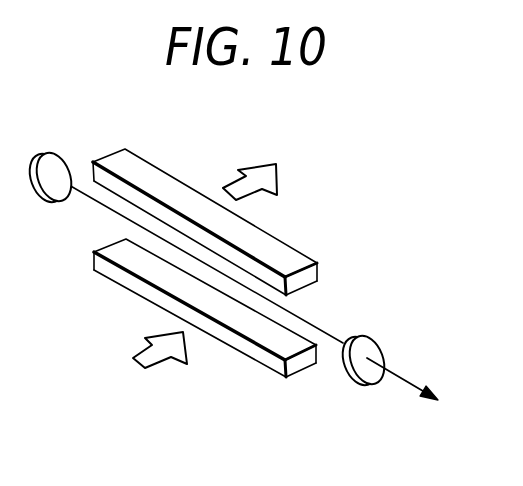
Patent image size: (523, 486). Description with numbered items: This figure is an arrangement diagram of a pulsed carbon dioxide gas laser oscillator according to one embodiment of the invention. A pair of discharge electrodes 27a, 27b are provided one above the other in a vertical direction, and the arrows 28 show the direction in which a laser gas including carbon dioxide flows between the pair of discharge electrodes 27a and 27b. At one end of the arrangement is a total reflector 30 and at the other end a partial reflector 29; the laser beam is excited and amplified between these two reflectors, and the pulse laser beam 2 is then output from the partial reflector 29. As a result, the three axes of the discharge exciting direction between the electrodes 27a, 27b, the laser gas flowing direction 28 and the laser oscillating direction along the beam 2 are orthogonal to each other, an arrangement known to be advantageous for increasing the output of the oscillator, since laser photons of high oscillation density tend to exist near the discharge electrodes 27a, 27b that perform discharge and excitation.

The total reflector 30 is at (55, 150).
The partial reflector 29 is at (373, 337).
The discharge electrode 27a is at (297, 250).
The discharge electrode 27b is at (273, 370).
The arrows 28 is at (162, 358).
The pulse laser beam 2 is at (395, 372).